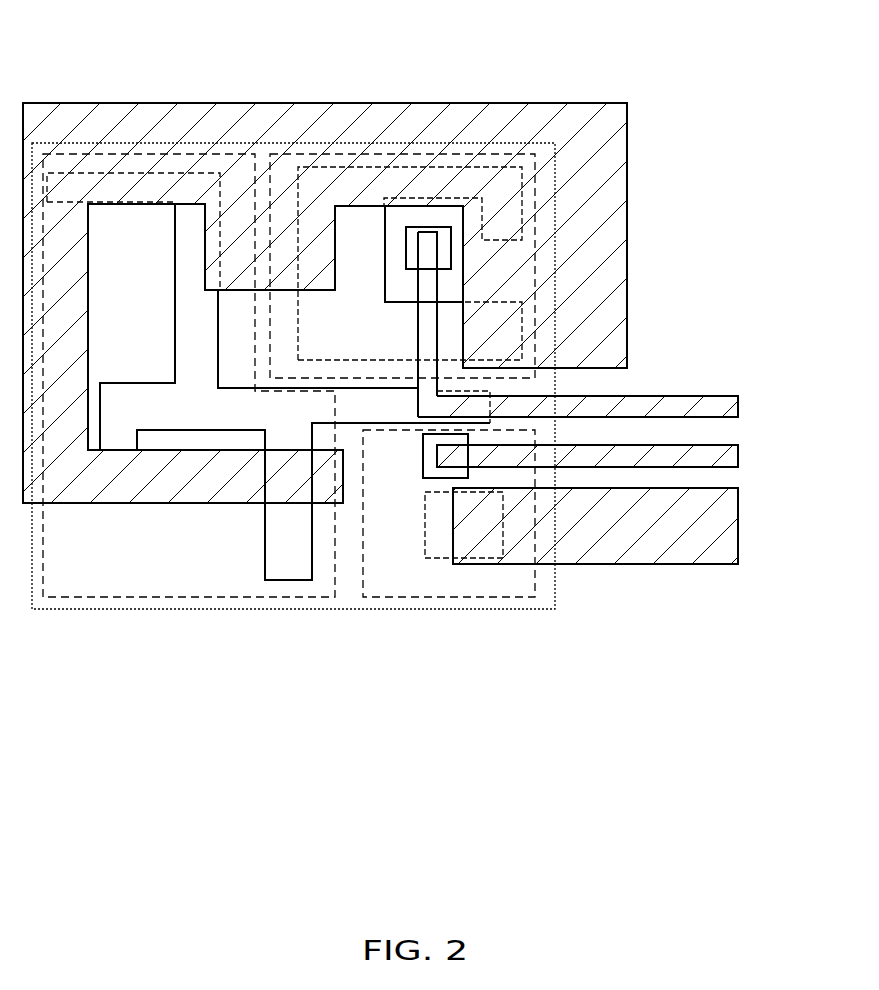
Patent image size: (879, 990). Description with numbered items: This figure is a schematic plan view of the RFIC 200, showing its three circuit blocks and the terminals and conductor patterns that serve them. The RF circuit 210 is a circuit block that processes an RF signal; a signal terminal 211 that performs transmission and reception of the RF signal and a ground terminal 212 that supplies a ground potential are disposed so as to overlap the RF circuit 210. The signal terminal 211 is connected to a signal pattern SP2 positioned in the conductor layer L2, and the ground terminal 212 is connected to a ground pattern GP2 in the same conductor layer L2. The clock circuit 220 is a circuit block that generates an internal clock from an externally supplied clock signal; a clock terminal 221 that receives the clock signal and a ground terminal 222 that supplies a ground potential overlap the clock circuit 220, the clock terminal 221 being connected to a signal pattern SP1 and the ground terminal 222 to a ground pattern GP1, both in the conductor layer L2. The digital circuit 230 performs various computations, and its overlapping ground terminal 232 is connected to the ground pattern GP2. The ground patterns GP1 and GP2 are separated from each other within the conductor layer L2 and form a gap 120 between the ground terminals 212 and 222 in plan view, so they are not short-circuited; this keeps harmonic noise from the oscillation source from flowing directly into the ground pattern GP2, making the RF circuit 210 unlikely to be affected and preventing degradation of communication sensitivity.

The digital circuit 230 is at (133, 101).
The ground terminal 232 is at (283, 560).
The RFIC 200 is at (556, 603).
The RF circuit 210 is at (410, 150).
The signal terminal 211 is at (445, 235).
The ground terminal 212 is at (362, 228).
The gap 120 is at (634, 383).
The ground pattern GP2 is at (627, 282).
The conductor layer L2 is at (683, 210).
The signal pattern SP2 is at (740, 405).
The signal pattern SP1 is at (740, 455).
The ground pattern GP1 is at (740, 530).
The clock terminal 221 is at (423, 470).
The ground terminal 222 is at (437, 540).
The clock circuit 220 is at (495, 605).